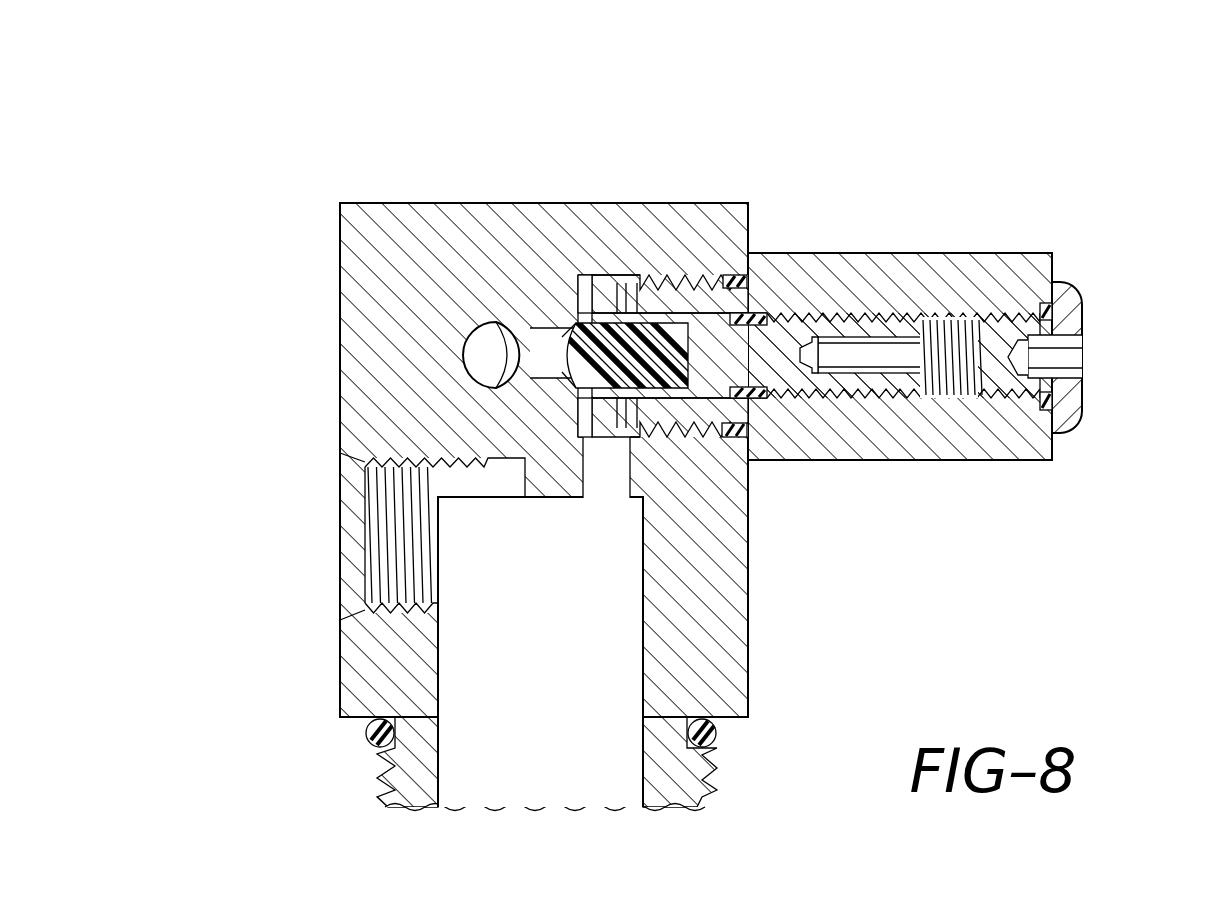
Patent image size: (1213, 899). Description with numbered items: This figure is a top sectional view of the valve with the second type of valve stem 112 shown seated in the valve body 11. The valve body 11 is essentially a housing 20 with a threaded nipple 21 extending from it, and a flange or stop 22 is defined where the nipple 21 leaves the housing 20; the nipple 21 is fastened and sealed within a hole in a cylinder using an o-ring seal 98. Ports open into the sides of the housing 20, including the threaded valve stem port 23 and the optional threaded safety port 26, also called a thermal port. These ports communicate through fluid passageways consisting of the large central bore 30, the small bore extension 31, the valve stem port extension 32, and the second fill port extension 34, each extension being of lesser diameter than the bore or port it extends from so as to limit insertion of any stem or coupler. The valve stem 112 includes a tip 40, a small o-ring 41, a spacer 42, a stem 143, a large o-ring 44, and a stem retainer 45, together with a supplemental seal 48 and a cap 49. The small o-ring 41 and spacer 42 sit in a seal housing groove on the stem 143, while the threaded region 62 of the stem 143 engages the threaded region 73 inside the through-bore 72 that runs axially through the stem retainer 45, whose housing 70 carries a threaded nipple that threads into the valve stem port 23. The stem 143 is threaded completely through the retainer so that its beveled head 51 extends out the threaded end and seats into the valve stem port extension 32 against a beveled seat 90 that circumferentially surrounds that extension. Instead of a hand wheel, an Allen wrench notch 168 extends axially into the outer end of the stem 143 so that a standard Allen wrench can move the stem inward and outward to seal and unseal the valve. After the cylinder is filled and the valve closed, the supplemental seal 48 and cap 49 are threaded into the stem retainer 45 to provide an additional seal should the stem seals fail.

The valve body 11 is at (450, 202).
The housing 20 is at (370, 203).
The threaded nipple 21 is at (698, 787).
The flange or stop 22 is at (347, 718).
The valve stem port 23 is at (613, 290).
The safety port 26 is at (350, 523).
The large central bore 30 is at (524, 694).
The small bore extension 31 is at (612, 477).
The valve stem port extension 32 is at (550, 337).
The second fill port extension 34 is at (480, 357).
The tip 40 is at (673, 323).
The small o-ring 41 is at (745, 320).
The spacer 42 is at (767, 317).
The large o-ring 44 is at (742, 278).
The stem retainer 45 is at (928, 254).
The supplemental seal 48 is at (1047, 400).
The cap 49 is at (1077, 293).
The head 51 is at (565, 378).
The threaded region 62 is at (887, 317).
The housing 70 is at (1035, 443).
The through-bore 72 is at (818, 317).
The threaded region 73 is at (955, 340).
The beveled seat 90 is at (593, 317).
The o-ring seal 98 is at (717, 745).
The valve stem 112 is at (1020, 235).
The stem 143 is at (812, 387).
The Allen wrench notch 168 is at (903, 360).